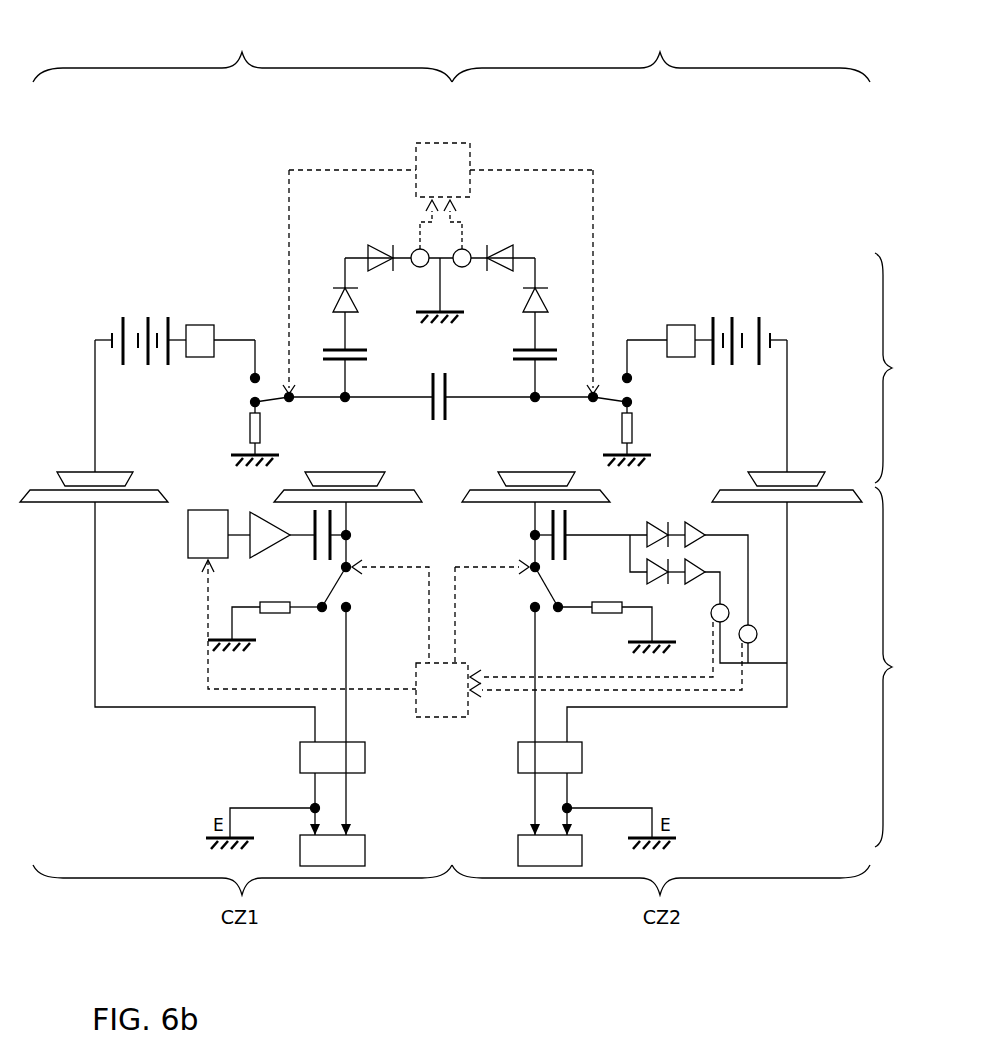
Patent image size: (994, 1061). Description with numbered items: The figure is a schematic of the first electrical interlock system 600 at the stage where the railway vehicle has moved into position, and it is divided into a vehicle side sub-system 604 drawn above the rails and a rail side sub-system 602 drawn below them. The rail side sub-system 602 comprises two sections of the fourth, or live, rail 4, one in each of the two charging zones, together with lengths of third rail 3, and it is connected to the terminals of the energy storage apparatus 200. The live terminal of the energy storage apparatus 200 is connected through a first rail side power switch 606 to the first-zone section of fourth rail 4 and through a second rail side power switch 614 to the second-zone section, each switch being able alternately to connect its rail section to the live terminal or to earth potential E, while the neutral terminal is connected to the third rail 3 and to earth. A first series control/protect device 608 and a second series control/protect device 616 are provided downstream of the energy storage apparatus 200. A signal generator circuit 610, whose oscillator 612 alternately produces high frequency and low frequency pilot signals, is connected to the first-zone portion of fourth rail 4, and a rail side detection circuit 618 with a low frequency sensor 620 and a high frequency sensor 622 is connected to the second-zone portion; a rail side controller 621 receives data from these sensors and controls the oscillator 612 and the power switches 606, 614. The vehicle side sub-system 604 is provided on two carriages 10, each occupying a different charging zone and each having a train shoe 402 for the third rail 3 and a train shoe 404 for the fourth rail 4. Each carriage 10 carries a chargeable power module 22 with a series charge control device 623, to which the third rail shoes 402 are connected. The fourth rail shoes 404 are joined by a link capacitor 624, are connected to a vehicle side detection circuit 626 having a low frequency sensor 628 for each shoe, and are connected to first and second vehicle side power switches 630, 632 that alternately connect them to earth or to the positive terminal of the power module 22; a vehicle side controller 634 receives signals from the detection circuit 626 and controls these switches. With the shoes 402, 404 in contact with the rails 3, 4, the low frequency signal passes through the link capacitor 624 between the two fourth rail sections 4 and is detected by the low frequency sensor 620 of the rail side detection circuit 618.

The carriage 10 is at (451, 49).
The first electrical interlock system 600 is at (792, 181).
The chargeable power module 22 is at (195, 306).
The series charge control device 623 is at (204, 340).
The vehicle side controller 634 is at (428, 181).
The low frequency sensor 628 is at (418, 247).
The vehicle side detection circuit 626 is at (552, 249).
The link capacitor 624 is at (460, 389).
The first vehicle side power switch 630 is at (236, 390).
The second vehicle side power switch 632 is at (643, 390).
The train shoe 402 is at (78, 478).
The train shoe 404 is at (364, 478).
The third rail 3 is at (61, 497).
The fourth rail 4 is at (405, 497).
The oscillator 612 is at (195, 546).
The signal generator circuit 610 is at (190, 565).
The first rail side power switch 606 is at (328, 621).
The second rail side power switch 614 is at (541, 613).
The rail side detection circuit 618 is at (770, 585).
The low frequency sensor 620 is at (713, 614).
The high frequency sensor 622 is at (757, 637).
The rail side controller 621 is at (429, 701).
The first series control/protect device 608 is at (302, 755).
The second series control/protect device 616 is at (577, 758).
The energy storage apparatus 200 is at (338, 855).
The vehicle side sub-system 604 is at (907, 368).
The rail side sub-system 602 is at (907, 667).